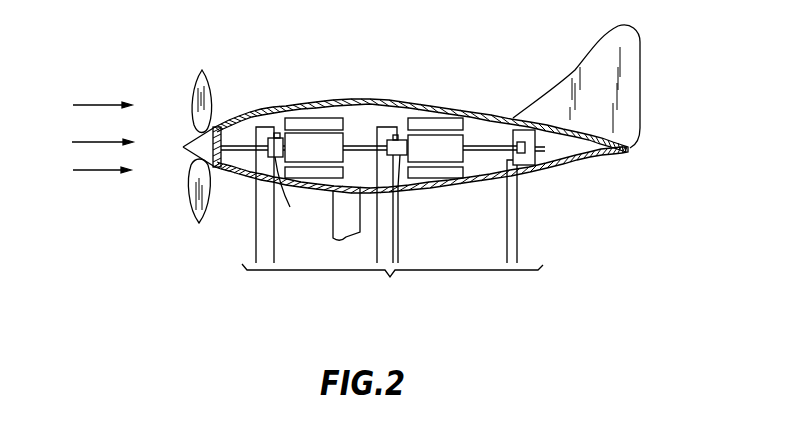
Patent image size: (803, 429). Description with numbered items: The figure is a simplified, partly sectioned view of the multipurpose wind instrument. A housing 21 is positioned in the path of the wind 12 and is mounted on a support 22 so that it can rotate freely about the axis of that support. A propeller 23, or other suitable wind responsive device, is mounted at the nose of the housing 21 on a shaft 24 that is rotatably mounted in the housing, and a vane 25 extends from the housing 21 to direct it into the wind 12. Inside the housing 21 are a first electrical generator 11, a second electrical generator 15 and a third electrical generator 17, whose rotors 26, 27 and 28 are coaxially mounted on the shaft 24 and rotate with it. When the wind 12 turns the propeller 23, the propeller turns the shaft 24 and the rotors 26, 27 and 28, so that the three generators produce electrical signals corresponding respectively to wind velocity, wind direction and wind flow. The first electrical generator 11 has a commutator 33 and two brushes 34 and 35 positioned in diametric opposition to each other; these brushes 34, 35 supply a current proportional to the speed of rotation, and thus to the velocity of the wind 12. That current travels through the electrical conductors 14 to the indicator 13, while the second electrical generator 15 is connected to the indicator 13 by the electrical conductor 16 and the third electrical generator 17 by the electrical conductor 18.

The first electrical generator 11 is at (320, 120).
The wind 12 is at (105, 137).
The indicator 13 is at (392, 282).
The electrical conductor 14 is at (274, 240).
The second electrical generator 15 is at (440, 127).
The electrical conductor 16 is at (399, 245).
The third electrical generator 17 is at (527, 130).
The electrical conductor 18 is at (517, 232).
The housing 21 is at (388, 117).
The support 22 is at (333, 237).
The propeller 23 is at (203, 83).
The shaft 24 is at (480, 152).
The vane 25 is at (618, 42).
The rotor 26 is at (340, 142).
The rotor 27 is at (458, 140).
The rotor 28 is at (517, 152).
The commutator 33 is at (270, 155).
The brush 34 is at (276, 137).
The brush 35 is at (291, 191).